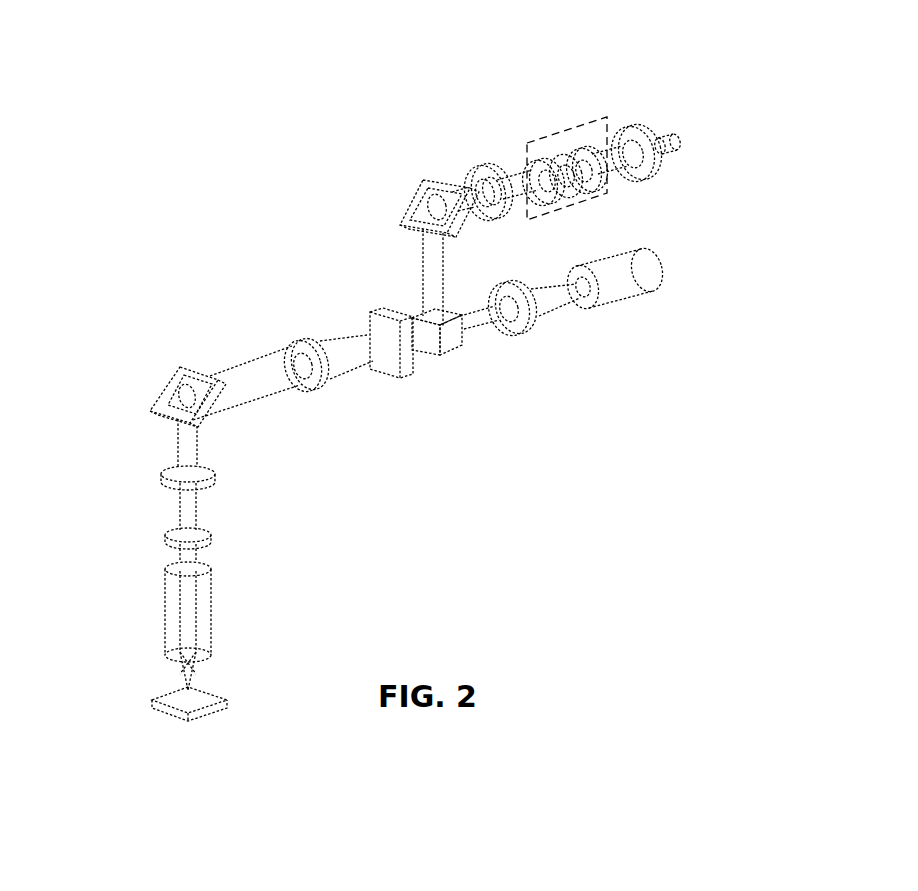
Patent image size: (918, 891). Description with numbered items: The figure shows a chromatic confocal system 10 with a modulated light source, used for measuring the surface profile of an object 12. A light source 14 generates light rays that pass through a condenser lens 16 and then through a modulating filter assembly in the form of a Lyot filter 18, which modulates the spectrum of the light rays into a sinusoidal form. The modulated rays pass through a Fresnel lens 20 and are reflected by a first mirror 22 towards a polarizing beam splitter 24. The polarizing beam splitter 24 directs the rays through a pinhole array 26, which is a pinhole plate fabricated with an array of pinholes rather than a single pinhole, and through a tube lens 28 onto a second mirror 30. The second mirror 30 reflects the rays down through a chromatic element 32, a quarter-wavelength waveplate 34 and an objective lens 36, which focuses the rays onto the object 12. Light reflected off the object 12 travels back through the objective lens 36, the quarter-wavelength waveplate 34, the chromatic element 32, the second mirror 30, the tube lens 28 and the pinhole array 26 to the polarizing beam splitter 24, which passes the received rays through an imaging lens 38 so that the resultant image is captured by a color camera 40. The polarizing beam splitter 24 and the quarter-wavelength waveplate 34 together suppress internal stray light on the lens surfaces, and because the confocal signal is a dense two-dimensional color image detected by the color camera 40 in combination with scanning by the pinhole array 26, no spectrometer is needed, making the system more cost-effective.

The chromatic confocal system 10 is at (240, 165).
The object 12 is at (168, 716).
The light source 14 is at (680, 150).
The condenser lens 16 is at (637, 127).
The Lyot filter 18 is at (563, 127).
The Fresnel lens 20 is at (480, 167).
The first mirror 22 is at (407, 198).
The polarizing beam splitter 24 is at (443, 357).
The pinhole array 26 is at (370, 332).
The tube lens 28 is at (290, 349).
The second mirror 30 is at (158, 388).
The chromatic element 32 is at (158, 476).
The quarter-wavelength waveplate 34 is at (165, 537).
The objective lens 36 is at (160, 625).
The imaging lens 38 is at (527, 335).
The color camera 40 is at (628, 298).